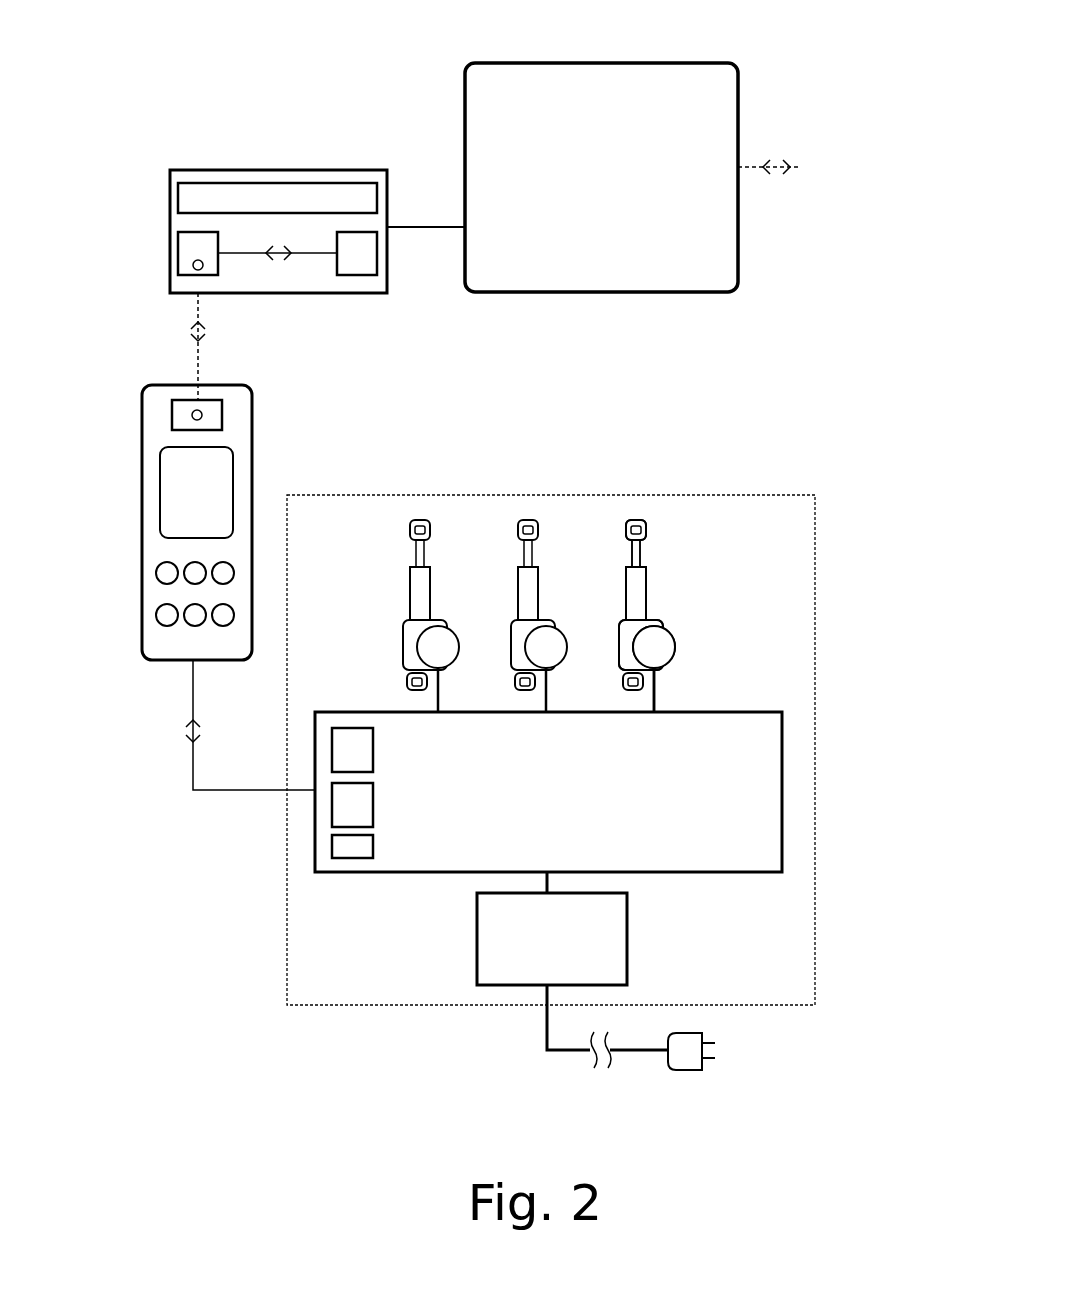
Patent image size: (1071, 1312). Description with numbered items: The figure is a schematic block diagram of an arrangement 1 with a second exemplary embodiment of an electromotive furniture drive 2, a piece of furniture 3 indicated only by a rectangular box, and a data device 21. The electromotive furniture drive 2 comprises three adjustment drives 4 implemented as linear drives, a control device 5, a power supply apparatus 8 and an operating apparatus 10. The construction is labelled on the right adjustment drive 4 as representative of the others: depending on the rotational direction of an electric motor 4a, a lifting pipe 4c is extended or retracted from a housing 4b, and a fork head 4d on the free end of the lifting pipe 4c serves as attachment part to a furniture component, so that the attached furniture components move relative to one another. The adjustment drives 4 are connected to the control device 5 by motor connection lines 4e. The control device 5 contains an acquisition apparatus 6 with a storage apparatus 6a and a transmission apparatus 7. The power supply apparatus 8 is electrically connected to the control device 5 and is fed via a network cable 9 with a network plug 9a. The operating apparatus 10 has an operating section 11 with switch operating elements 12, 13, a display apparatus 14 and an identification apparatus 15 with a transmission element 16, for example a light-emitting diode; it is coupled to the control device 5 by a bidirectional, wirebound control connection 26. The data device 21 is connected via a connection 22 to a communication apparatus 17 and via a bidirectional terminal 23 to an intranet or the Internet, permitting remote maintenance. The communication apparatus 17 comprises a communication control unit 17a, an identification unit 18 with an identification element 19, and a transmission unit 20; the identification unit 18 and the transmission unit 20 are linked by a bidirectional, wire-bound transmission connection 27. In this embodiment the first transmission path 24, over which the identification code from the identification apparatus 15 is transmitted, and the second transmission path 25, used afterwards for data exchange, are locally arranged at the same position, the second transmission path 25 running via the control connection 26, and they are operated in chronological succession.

The arrangement 1 is at (157, 74).
The electromotive furniture drive 2 is at (733, 430).
The piece of furniture 3 is at (778, 493).
The adjustment drive 4 is at (438, 524).
The electric motor 4a is at (663, 645).
The housing 4b is at (647, 618).
The lifting pipe 4c is at (640, 552).
The fork head 4d is at (635, 528).
The motor connection line 4e is at (658, 693).
The control device 5 is at (762, 712).
The acquisition apparatus 6 is at (340, 803).
The storage apparatus 6a is at (340, 848).
The transmission apparatus 7 is at (340, 742).
The power supply apparatus 8 is at (475, 975).
The network cable 9 is at (542, 1040).
The network plug 9a is at (705, 1052).
The operating apparatus 10 is at (150, 663).
The operating section 11 is at (135, 594).
The switch operating element 12 is at (157, 567).
The switch operating element 13 is at (160, 620).
The display apparatus 14 is at (163, 477).
The identification apparatus 15 is at (173, 417).
The transmission element 16 is at (195, 413).
The communication apparatus 17 is at (215, 170).
The communication control unit 17a is at (193, 197).
The identification unit 18 is at (185, 242).
The identification element 19 is at (194, 267).
The transmission unit 20 is at (355, 242).
The data device 21 is at (470, 90).
The connection 22 is at (423, 223).
The bidirectional terminal 23 is at (755, 167).
The first transmission path 24 is at (202, 363).
The second transmission path 25 is at (271, 582).
The control connection 26 is at (223, 792).
The transmission connection 27 is at (243, 253).